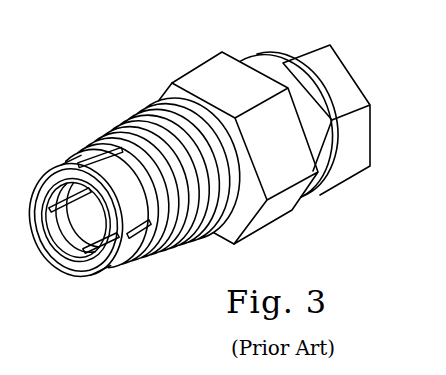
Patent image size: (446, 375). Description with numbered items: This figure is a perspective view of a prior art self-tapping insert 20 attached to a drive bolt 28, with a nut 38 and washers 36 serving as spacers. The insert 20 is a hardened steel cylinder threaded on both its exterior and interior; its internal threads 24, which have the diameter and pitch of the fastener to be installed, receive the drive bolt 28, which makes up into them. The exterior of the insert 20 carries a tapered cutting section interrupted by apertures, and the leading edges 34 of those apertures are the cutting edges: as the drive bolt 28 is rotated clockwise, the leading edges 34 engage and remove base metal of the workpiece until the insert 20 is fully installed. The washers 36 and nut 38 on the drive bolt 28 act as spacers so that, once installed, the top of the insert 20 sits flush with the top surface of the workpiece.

The self-tapping insert 20 is at (56, 136).
The internal threads 24 is at (60, 245).
The drive bolt 28 is at (350, 65).
The leading edges 34 is at (157, 231).
The washers 36 is at (143, 127).
The nut 38 is at (207, 60).